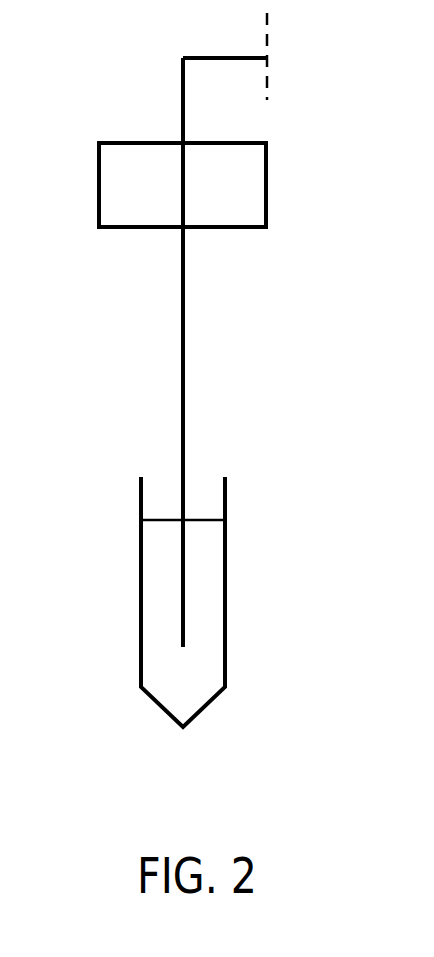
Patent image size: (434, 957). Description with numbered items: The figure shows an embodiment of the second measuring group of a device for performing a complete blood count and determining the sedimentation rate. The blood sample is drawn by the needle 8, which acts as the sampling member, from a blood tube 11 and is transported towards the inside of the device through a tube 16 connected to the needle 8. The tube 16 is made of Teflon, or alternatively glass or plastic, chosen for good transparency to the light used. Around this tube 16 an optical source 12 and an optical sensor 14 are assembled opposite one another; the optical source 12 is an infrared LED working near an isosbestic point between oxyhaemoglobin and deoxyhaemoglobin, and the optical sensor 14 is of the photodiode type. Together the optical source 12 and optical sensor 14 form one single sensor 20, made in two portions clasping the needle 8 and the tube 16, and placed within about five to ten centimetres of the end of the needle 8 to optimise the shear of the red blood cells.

The sampling member 8 is at (183, 603).
The blood tube 11 is at (225, 687).
The optical source 12 is at (141, 185).
The optical sensor 14 is at (224, 185).
The tube 16 is at (181, 98).
The sensor 20 is at (223, 227).